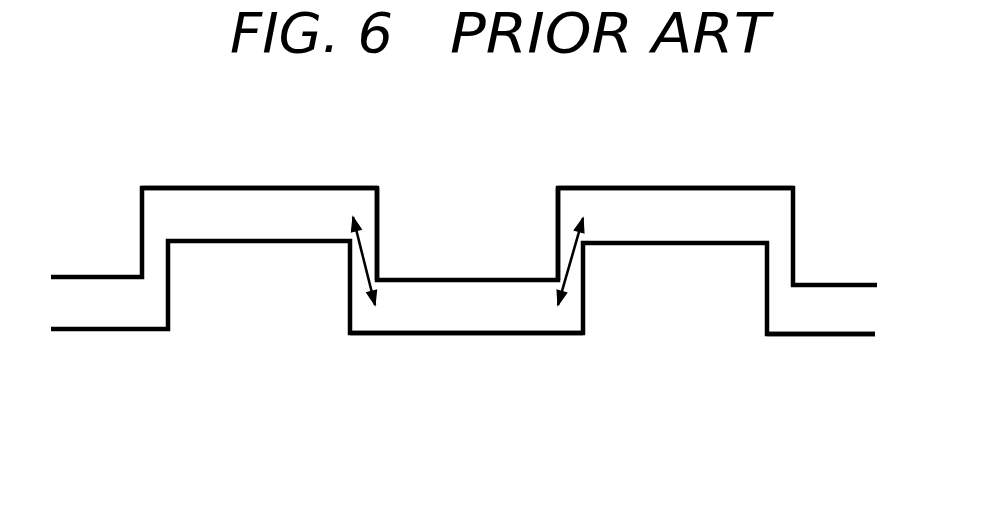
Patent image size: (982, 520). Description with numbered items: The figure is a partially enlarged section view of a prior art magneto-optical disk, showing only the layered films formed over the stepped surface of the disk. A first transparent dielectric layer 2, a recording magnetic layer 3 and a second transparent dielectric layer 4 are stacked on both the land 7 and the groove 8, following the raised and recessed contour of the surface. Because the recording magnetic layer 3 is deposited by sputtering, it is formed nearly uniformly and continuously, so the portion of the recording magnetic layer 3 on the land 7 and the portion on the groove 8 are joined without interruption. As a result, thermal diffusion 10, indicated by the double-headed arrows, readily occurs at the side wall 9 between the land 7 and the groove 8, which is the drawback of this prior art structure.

The first transparent dielectric layer 2 is at (826, 353).
The recording magnetic layer 3 is at (468, 287).
The second transparent dielectric layer 4 is at (468, 236).
The land 7 is at (255, 188).
The groove 8 is at (462, 333).
The side wall 9 is at (378, 237).
The thermal diffusion 10 is at (365, 265).